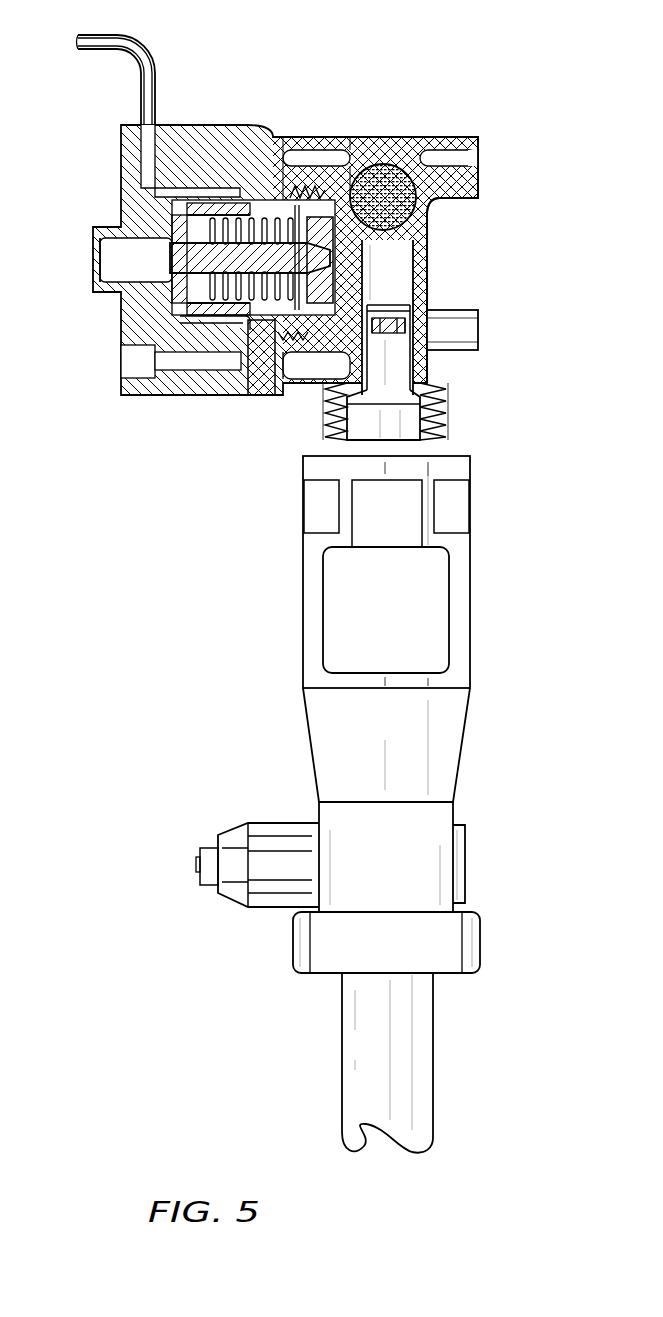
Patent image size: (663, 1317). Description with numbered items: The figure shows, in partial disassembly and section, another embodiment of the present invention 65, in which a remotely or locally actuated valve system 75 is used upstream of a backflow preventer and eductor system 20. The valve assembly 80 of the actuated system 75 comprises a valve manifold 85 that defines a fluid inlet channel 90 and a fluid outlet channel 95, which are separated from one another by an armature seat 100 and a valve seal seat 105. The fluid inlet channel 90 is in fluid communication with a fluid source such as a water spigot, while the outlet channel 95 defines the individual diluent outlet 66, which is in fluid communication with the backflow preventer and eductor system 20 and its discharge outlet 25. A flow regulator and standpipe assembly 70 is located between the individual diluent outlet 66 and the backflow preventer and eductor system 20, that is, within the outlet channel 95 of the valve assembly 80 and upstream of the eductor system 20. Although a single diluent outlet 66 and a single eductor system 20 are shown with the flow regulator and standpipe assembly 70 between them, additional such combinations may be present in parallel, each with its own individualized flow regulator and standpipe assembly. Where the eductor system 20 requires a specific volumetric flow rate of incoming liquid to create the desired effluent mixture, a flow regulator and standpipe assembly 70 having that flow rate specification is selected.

The backflow preventer and eductor system 20 is at (253, 674).
The discharge outlet 25 is at (362, 1140).
The embodiment of the present invention 65 is at (104, 944).
The individual diluent outlet 66 is at (397, 290).
The flow regulator and standpipe assembly 70 is at (403, 422).
The actuated valve system 75 is at (306, 228).
The valve assembly 80 is at (452, 240).
The valve manifold 85 is at (427, 365).
The fluid inlet channel 90 is at (393, 183).
The fluid outlet channel 95 is at (403, 270).
The armature seat 100 is at (245, 143).
The valve seal seat 105 is at (285, 330).